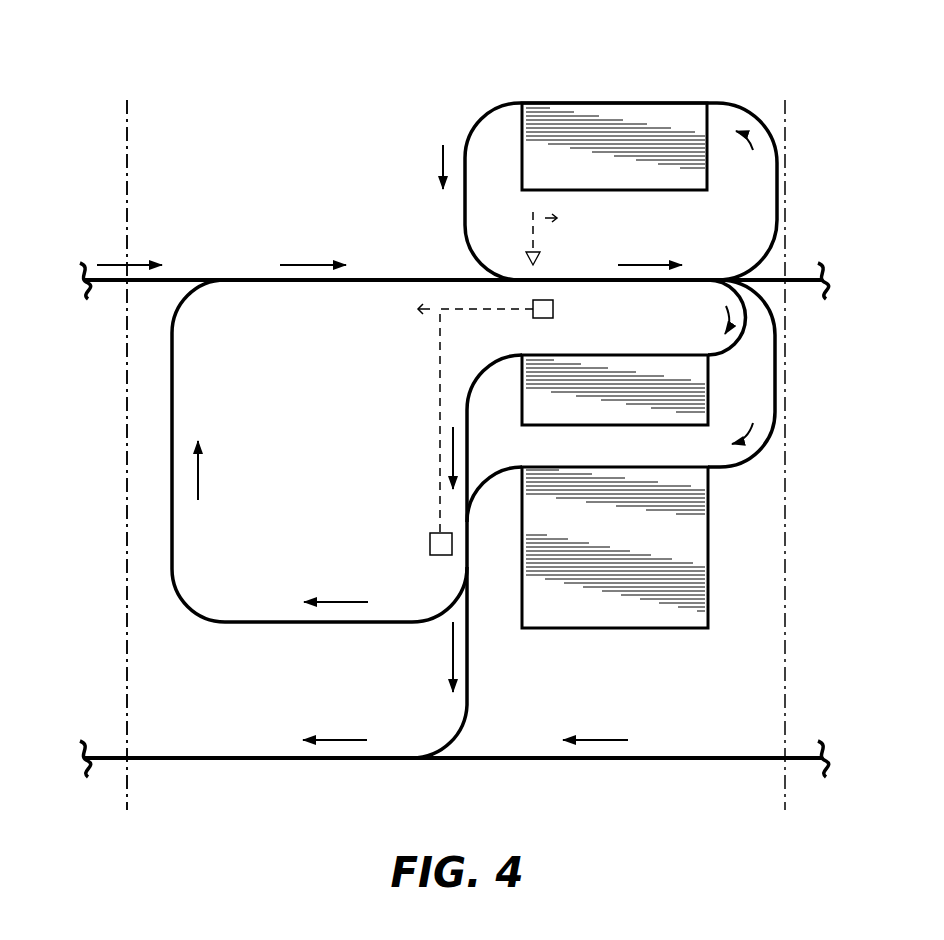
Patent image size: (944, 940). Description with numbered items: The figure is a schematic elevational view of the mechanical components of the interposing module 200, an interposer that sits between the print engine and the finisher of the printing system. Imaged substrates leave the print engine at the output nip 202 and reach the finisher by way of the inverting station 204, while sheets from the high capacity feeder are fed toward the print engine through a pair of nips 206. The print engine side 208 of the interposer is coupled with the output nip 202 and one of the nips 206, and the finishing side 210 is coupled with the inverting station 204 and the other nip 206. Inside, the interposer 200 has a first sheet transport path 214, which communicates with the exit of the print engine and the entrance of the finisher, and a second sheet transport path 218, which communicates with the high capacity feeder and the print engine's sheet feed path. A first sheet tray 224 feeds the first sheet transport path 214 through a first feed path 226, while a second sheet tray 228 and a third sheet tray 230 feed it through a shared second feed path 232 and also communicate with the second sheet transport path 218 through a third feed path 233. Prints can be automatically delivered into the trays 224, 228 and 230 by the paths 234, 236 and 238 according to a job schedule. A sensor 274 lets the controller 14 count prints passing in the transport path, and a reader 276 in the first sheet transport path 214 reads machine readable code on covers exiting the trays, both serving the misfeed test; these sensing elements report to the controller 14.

The controller 14 is at (489, 264).
The interposing module 200 is at (255, 57).
The output nip 202 is at (247, 281).
The inverting station 204 is at (808, 281).
The nips 206 is at (454, 758).
The print engine side 208 is at (107, 512).
The finishing side 210 is at (812, 513).
The first sheet transport path 214 is at (567, 280).
The second sheet transport path 218 is at (683, 758).
The first sheet tray 224 is at (617, 103).
The first feed path 226 is at (483, 118).
The second sheet tray 228 is at (622, 355).
The third sheet tray 230 is at (622, 467).
The second feed path 232 is at (205, 612).
The third feed path 233 is at (468, 668).
The print feed path to first tray 234 is at (753, 105).
The print feed path to second tray 236 is at (728, 357).
The print feed path to third tray 238 is at (740, 468).
The sensor 274 is at (526, 258).
The reader 276 is at (553, 305).